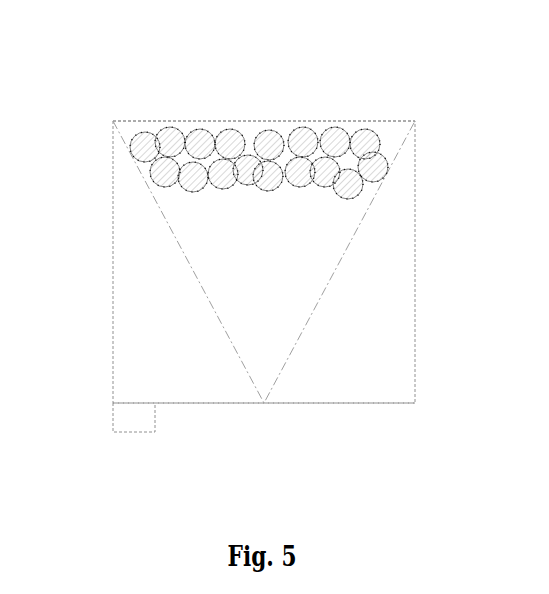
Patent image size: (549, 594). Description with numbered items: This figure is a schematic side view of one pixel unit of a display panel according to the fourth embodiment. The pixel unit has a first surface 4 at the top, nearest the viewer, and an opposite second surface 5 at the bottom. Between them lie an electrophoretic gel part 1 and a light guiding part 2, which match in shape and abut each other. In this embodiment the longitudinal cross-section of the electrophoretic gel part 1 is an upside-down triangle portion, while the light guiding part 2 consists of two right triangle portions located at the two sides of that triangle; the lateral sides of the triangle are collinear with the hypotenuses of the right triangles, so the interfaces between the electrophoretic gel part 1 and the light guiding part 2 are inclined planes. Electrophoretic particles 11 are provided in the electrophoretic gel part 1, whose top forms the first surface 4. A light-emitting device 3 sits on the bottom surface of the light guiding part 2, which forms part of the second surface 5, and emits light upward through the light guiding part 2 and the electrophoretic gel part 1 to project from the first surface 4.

The electrophoretic gel part 1 is at (312, 245).
The light guiding part 2 is at (368, 353).
The light-emitting device 3 is at (129, 420).
The first surface 4 is at (232, 120).
The second surface 5 is at (283, 404).
The electrophoretic particles 11 is at (382, 185).